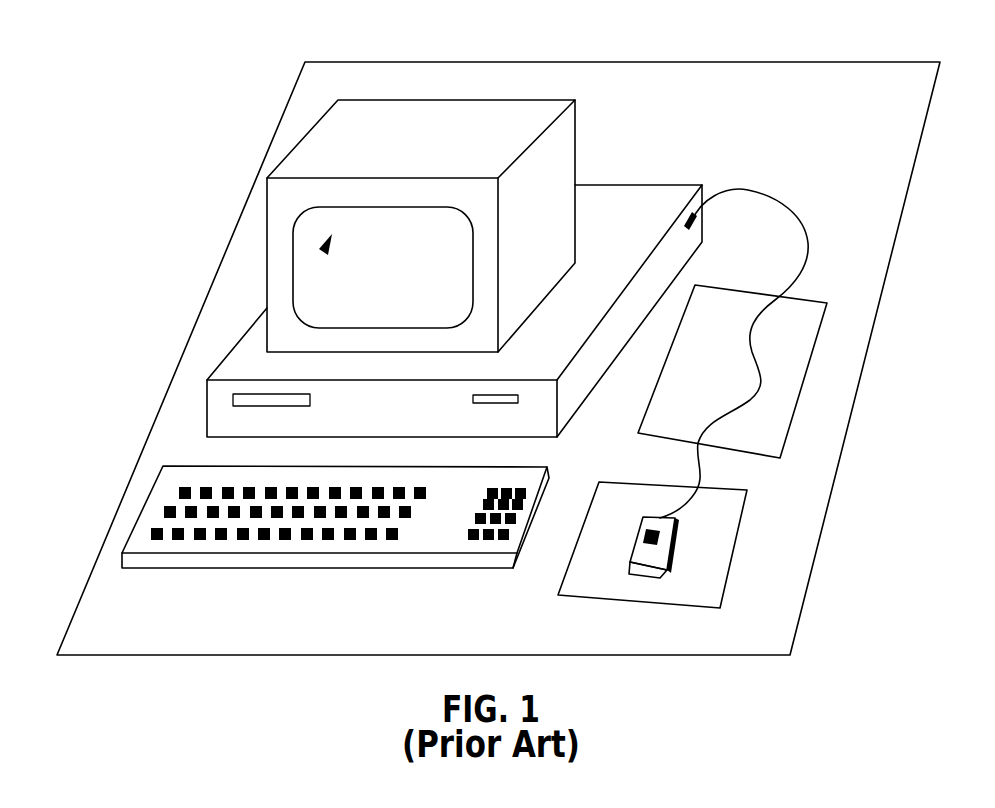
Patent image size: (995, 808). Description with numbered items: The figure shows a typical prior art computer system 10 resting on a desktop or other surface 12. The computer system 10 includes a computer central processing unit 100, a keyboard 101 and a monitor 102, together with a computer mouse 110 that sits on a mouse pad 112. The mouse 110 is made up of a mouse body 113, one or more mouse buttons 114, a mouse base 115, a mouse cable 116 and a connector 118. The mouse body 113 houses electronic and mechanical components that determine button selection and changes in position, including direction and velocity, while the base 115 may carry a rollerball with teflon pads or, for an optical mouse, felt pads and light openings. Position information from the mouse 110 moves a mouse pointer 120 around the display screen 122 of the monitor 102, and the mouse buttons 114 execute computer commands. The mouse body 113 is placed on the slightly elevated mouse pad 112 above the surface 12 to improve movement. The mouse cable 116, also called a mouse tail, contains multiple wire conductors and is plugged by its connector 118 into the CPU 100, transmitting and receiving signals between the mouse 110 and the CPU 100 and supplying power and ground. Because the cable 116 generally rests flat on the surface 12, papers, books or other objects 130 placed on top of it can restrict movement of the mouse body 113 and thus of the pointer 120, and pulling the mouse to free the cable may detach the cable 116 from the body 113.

The computer system 10 is at (142, 184).
The surface 12 is at (305, 62).
The computer central processing unit 100 is at (207, 381).
The keyboard 101 is at (147, 507).
The monitor 102 is at (290, 143).
The computer mouse 110 is at (714, 554).
The mouse pad 112 is at (598, 481).
The mouse body 113 is at (656, 555).
The mouse button 114 is at (656, 537).
The mouse base 115 is at (650, 574).
The mouse cable 116 is at (805, 227).
The connector 118 is at (696, 220).
The mouse pointer 120 is at (320, 250).
The display screen 122 is at (300, 216).
The objects 130 is at (827, 303).